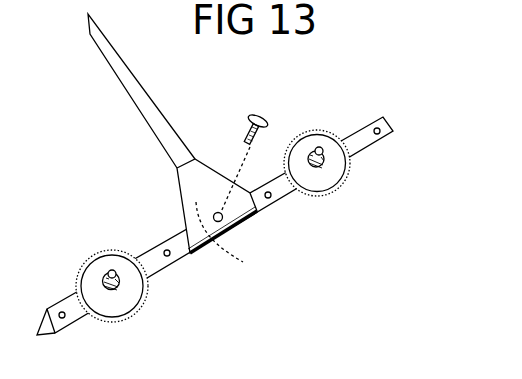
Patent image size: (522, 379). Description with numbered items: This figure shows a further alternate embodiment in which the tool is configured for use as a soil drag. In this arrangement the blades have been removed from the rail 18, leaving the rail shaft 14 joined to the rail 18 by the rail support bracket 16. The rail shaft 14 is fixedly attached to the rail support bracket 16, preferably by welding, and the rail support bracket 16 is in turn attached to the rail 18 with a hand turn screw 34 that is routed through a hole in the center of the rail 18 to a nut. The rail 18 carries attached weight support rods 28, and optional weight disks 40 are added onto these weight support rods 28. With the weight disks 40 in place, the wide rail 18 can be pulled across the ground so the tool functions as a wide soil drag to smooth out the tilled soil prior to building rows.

The rail shaft 14 is at (151, 117).
The rail support bracket 16 is at (222, 221).
The rail 18 is at (375, 134).
The weight support rod 28 is at (112, 270).
The hand turn screw 34 is at (261, 106).
The weight disk 40 is at (131, 281).